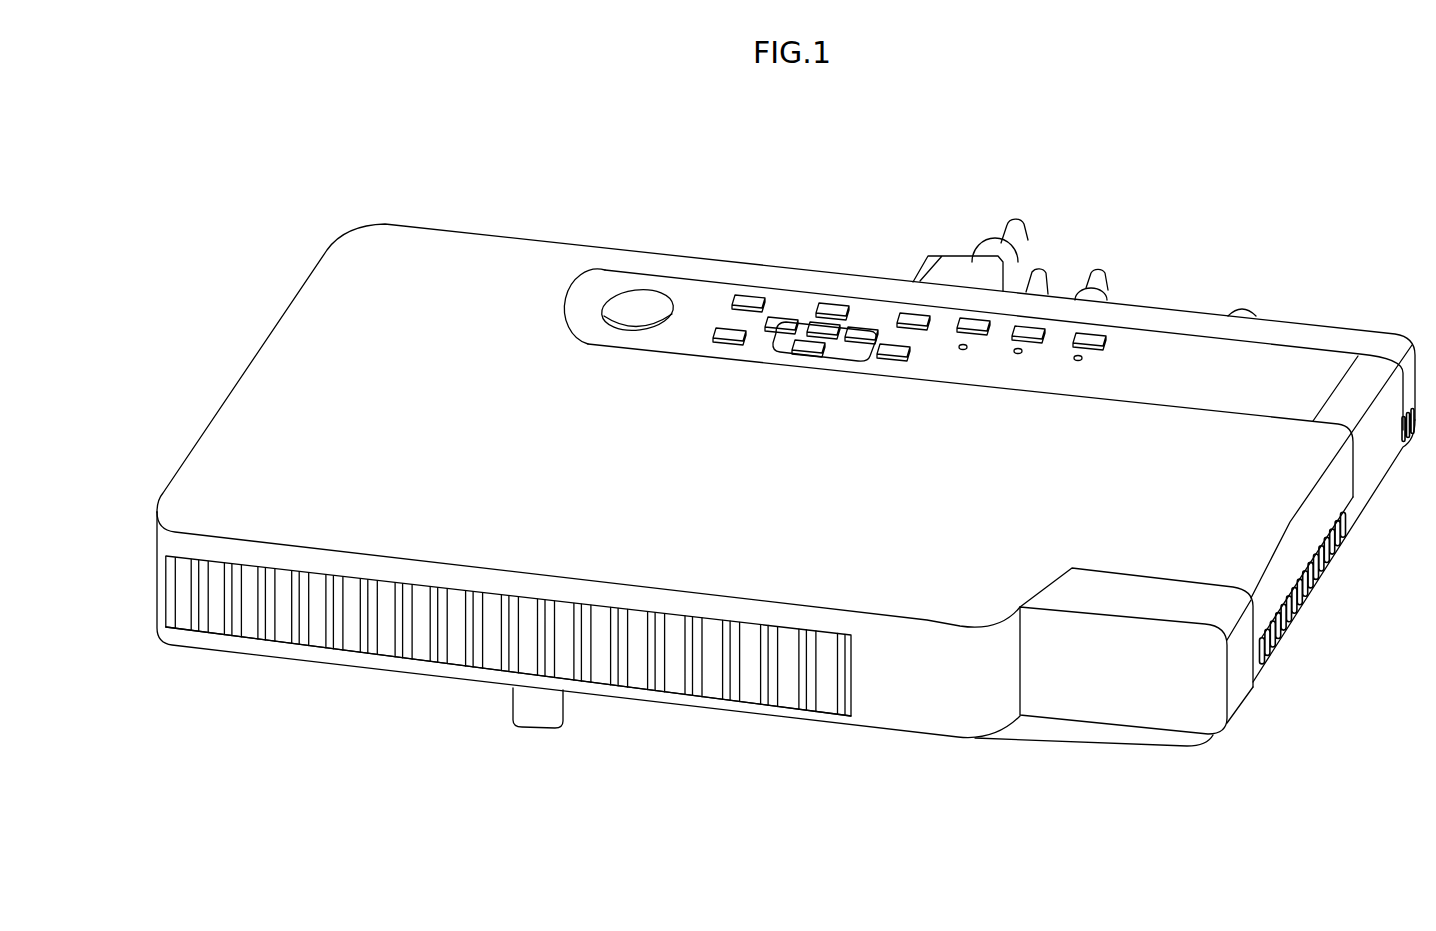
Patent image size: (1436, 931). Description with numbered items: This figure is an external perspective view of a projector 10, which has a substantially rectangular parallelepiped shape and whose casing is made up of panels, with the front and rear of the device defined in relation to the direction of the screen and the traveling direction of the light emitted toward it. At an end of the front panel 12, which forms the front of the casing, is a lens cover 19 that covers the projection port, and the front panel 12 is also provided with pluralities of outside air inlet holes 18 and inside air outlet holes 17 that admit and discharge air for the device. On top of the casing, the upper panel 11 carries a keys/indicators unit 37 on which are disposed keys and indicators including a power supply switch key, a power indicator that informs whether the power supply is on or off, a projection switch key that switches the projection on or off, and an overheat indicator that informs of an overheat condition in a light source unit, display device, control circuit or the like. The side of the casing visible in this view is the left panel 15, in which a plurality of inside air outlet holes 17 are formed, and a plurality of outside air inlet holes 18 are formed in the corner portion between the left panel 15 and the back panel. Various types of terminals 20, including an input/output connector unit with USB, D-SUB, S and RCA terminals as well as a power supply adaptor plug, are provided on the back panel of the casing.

The projector 10 is at (741, 175).
The upper panel 11 is at (535, 250).
The front panel 12 is at (903, 693).
The left panel 15 is at (1310, 535).
The inside air outlet holes 17 is at (378, 637).
The outside air inlet holes 18 is at (783, 690).
The lens cover 19 is at (1165, 705).
The terminals 20 is at (1055, 211).
The keys/indicators unit 37 is at (833, 251).